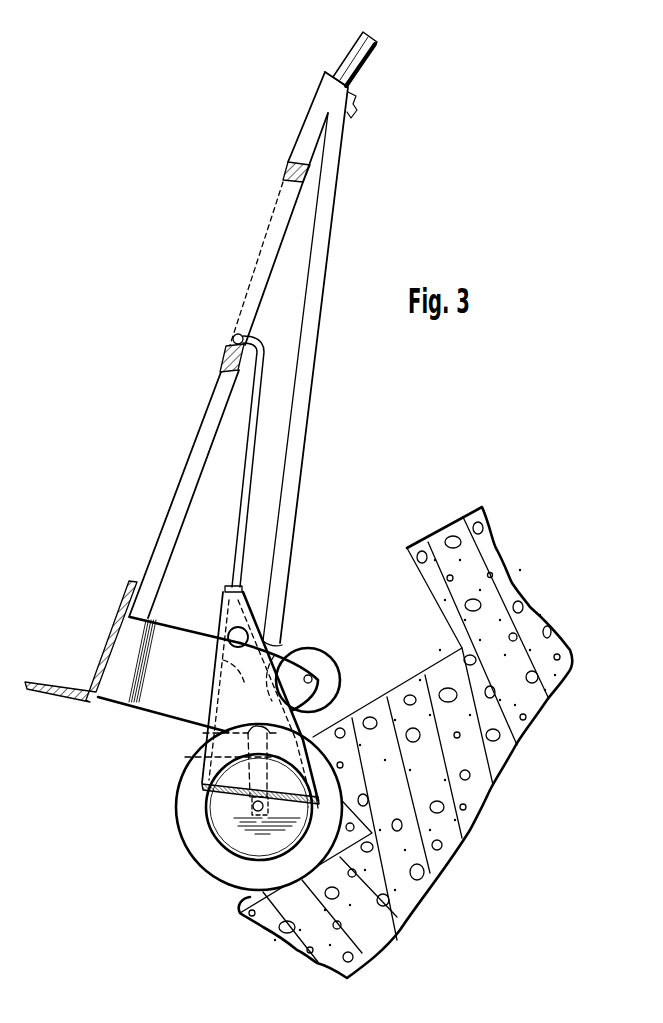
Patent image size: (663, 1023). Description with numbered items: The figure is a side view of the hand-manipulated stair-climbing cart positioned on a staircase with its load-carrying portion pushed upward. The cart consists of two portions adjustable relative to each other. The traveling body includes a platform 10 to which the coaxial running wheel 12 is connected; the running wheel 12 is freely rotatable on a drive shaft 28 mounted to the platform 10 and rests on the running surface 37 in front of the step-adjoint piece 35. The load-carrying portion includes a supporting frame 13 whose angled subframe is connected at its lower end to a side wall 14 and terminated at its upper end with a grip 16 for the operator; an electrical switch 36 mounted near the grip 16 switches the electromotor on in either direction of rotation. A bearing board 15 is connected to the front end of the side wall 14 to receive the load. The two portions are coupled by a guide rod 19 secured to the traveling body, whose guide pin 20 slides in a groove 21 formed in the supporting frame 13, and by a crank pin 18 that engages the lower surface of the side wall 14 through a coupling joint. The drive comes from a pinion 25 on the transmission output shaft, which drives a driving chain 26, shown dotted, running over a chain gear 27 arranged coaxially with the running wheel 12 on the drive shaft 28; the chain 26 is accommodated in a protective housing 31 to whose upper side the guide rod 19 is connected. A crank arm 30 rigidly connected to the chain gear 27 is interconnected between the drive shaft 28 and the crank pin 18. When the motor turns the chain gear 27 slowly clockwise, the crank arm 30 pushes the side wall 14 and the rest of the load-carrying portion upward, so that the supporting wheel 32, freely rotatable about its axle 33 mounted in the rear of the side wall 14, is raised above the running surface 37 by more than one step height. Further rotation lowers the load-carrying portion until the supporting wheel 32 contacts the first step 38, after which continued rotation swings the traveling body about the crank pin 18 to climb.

The platform 10 is at (290, 790).
The running wheel 12 is at (178, 796).
The supporting frame 13 is at (196, 420).
The side wall 14 is at (122, 683).
The bearing board 15 is at (63, 685).
The grip 16 is at (348, 55).
The crank pin 18 is at (203, 734).
The guide rod 19 is at (262, 445).
The guide pin 20 is at (233, 338).
The groove 21 is at (277, 235).
The pinion 25 is at (230, 628).
The driving chain 26 is at (239, 685).
The chain gear 27 is at (236, 834).
The drive shaft 28 is at (250, 808).
The crank arm 30 is at (205, 760).
The protective housing 31 is at (213, 695).
The supporting wheel 32 is at (333, 663).
The axle 33 is at (308, 673).
The step-adjoint piece 35 is at (373, 827).
The electrical switch 36 is at (357, 98).
The running surface 37 is at (240, 910).
The first step 38 is at (403, 680).